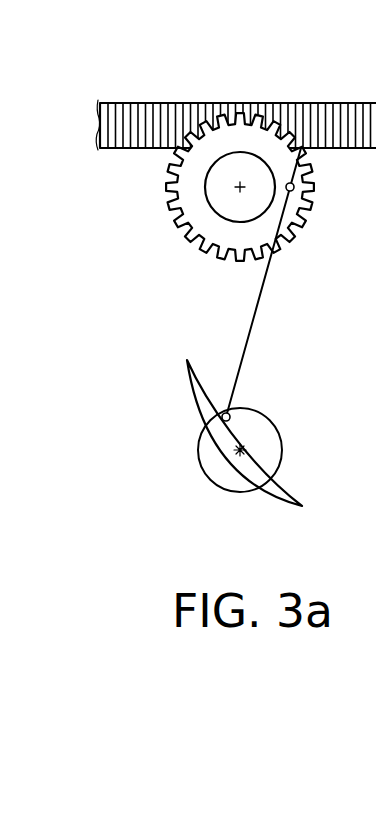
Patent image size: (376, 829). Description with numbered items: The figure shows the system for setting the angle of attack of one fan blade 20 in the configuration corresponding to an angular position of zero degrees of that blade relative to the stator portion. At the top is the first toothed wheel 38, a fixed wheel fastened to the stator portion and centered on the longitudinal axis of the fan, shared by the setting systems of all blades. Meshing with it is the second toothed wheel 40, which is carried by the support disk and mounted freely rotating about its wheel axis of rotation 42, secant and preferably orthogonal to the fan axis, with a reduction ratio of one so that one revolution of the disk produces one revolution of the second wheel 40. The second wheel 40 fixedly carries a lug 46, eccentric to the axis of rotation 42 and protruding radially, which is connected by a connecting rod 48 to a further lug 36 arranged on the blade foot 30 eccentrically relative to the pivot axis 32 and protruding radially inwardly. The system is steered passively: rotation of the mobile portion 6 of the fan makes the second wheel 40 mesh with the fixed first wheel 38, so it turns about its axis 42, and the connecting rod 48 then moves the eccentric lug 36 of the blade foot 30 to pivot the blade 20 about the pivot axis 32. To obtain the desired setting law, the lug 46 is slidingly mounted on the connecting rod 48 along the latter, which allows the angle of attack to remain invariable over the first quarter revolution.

The first toothed wheel 38 is at (148, 112).
The second toothed wheel 40 is at (297, 222).
The wheel axis of rotation 42 is at (244, 180).
The lug 46 is at (294, 187).
The connecting rod 48 is at (262, 300).
The mobile portion 6 is at (188, 390).
The blade foot 30 is at (279, 457).
The pivot axis 32 is at (244, 448).
The lug 36 is at (230, 416).
The blade 20 is at (277, 503).